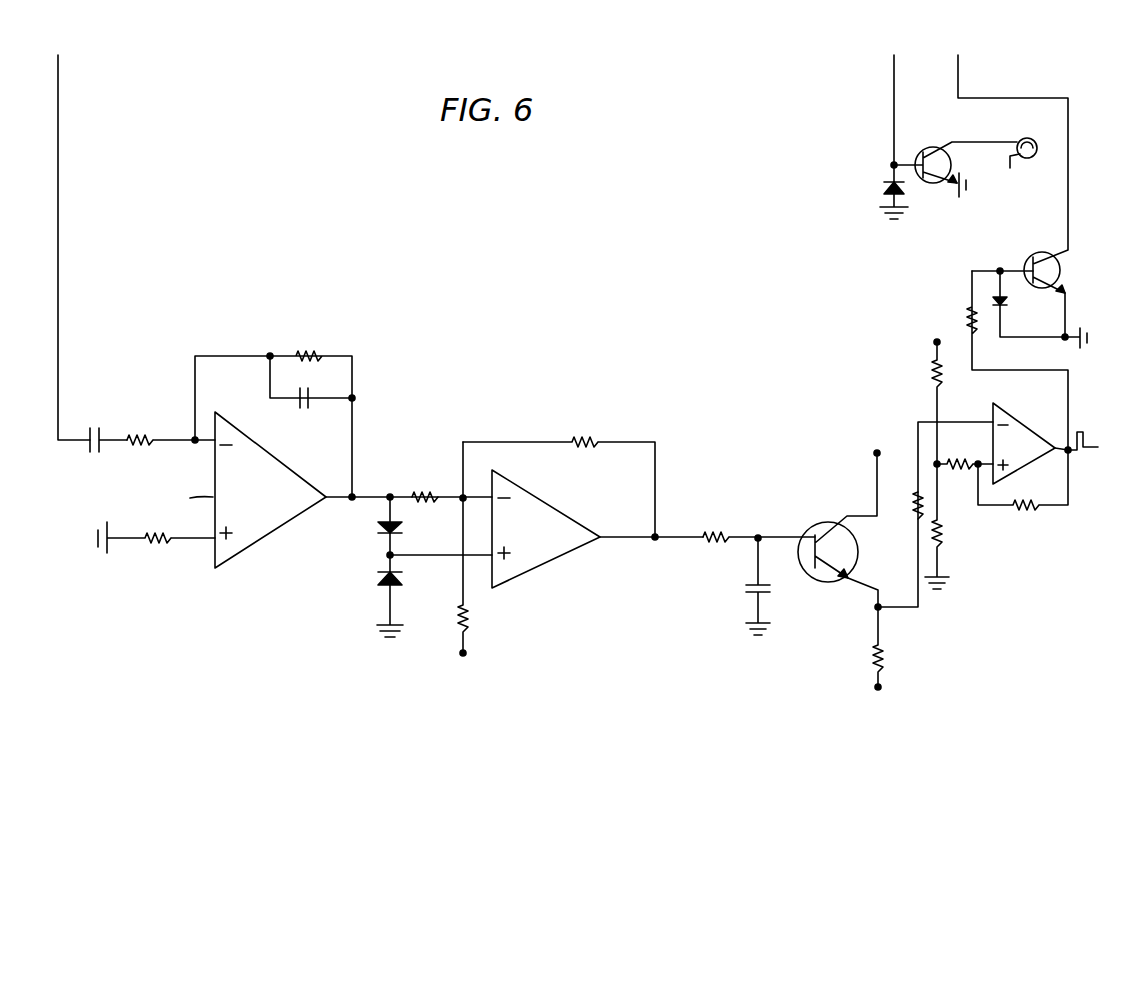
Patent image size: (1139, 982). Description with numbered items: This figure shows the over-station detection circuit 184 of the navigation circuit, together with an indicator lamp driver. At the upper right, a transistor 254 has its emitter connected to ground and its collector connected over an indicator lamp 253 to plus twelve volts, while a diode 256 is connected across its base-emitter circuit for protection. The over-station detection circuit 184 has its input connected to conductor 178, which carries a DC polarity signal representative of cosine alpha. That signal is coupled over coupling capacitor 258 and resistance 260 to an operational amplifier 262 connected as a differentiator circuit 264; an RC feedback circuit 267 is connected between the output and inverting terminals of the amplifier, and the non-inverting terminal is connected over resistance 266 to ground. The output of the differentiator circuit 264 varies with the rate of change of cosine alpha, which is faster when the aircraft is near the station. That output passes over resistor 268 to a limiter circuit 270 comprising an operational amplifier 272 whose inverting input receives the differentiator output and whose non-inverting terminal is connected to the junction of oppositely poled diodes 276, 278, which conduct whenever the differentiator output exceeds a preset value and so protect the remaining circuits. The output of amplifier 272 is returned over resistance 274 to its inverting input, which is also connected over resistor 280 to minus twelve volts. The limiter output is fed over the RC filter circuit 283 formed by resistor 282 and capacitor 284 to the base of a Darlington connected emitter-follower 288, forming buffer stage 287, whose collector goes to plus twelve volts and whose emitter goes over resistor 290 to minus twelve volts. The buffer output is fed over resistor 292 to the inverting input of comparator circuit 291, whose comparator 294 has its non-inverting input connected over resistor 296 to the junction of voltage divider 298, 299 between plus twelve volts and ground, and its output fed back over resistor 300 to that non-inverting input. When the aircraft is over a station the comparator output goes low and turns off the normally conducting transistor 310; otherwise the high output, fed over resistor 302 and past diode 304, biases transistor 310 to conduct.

The over-station detection circuit 184 is at (229, 325).
The conductor 178 is at (56, 432).
The coupling capacitor 258 is at (108, 432).
The resistance 260 is at (171, 430).
The operational amplifier 262 is at (179, 499).
The differentiator circuit 264 is at (262, 443).
The resistance 266 is at (158, 557).
The RC feedback circuit 267 is at (316, 358).
The resistor 268 is at (435, 490).
The limiter circuit 270 is at (488, 543).
The operational amplifier 272 is at (544, 563).
The resistance 274 is at (578, 447).
The diode 276 is at (375, 531).
The diode 278 is at (366, 576).
The resistor 280 is at (469, 564).
The resistor of RC filter circuit 282 is at (720, 547).
The filter circuit 283 is at (707, 561).
The capacitor of RC filter circuit 284 is at (749, 598).
The buffer circuit 287 is at (852, 573).
The Darlington connected emitter-follower 288 is at (808, 534).
The resistor 290 is at (884, 657).
The comparator circuit 291 is at (988, 465).
The resistor 292 is at (914, 498).
The comparator 294 is at (1038, 443).
The resistor 296 is at (965, 484).
The voltage divider resistor 298 is at (949, 529).
The voltage divider resistor 299 is at (935, 382).
The resistor 300 is at (1036, 503).
The resistor 302 is at (966, 318).
The diode 304 is at (1010, 288).
The transistor 310 is at (1074, 276).
The indicator lamp 253 is at (1042, 132).
The transistor 254 is at (932, 144).
The diode 256 is at (884, 187).